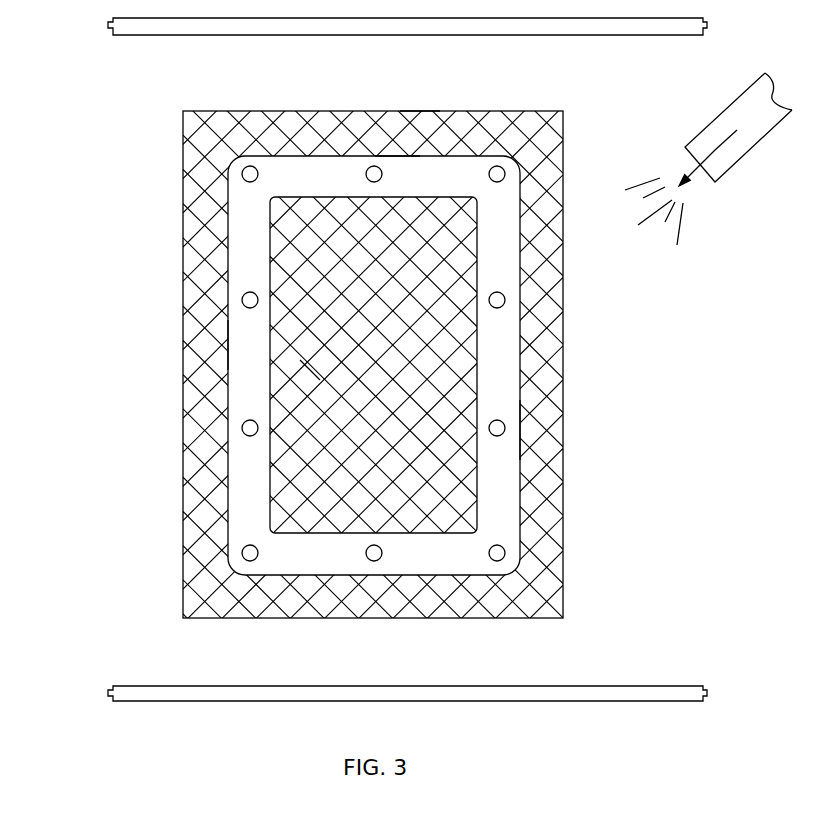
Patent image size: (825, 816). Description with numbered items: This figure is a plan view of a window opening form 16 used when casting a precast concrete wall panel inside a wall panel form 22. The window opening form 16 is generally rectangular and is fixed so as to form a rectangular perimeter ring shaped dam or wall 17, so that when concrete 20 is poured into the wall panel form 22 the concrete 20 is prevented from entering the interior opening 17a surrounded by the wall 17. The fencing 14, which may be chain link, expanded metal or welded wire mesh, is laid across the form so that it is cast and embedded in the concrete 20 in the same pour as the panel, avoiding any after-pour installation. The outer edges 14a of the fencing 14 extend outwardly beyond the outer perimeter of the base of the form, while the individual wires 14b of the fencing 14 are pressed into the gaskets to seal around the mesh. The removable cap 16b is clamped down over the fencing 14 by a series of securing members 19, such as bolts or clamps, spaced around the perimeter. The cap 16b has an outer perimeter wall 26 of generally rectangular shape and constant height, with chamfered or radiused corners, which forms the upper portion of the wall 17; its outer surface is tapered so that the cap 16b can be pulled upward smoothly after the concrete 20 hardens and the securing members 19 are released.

The fencing 14 is at (522, 113).
The outer edges of the fencing 14a is at (418, 122).
The wires of the fencing 14b is at (396, 132).
The window opening form 16 is at (507, 376).
The cap 16b is at (507, 440).
The wall 17 is at (507, 510).
The opening 17a is at (298, 370).
The securing members 19 is at (506, 302).
The concrete 20 is at (678, 230).
The wall panel form 22 is at (650, 685).
The outer perimeter wall of the cap 26 is at (245, 345).